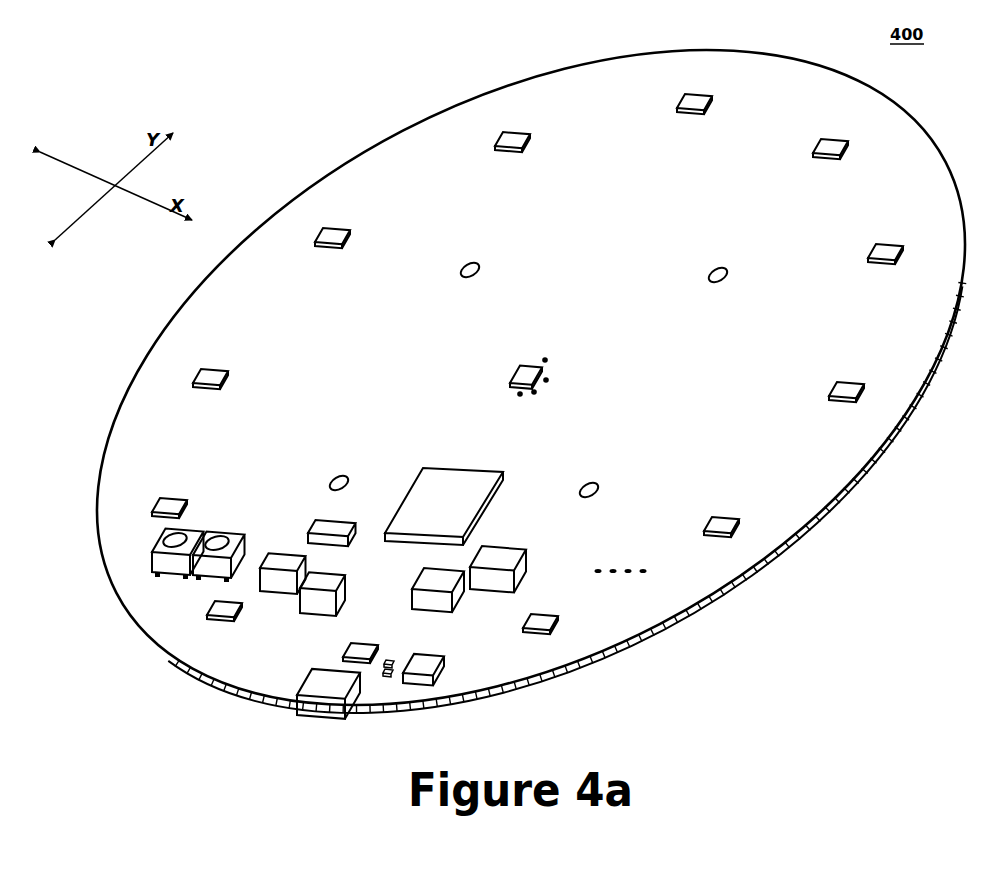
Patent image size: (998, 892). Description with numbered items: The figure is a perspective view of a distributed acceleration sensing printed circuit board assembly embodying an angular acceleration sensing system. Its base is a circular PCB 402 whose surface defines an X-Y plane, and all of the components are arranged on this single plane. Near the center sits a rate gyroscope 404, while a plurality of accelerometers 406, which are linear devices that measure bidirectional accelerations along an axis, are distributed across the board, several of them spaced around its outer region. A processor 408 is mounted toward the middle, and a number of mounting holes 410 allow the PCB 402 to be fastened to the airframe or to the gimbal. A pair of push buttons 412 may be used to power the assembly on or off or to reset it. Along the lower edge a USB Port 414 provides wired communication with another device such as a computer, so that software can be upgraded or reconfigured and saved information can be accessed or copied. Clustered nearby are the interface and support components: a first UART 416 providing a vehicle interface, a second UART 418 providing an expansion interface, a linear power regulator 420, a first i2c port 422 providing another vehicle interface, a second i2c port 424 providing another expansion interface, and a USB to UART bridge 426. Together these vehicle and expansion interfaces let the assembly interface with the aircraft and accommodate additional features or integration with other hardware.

The PCB 402 is at (418, 126).
The rate gyroscope 404 is at (508, 380).
The accelerometers 406 is at (513, 155).
The processor 408 is at (462, 468).
The mounting holes 410 is at (476, 265).
The push buttons 412 is at (234, 526).
The USB Port 414 is at (318, 709).
The first UART 416 is at (272, 592).
The second UART 418 is at (313, 608).
The linear power regulator 420 is at (325, 527).
The first i2c port 422 is at (412, 586).
The second i2c port 424 is at (530, 564).
The USB to UART bridge 426 is at (435, 686).